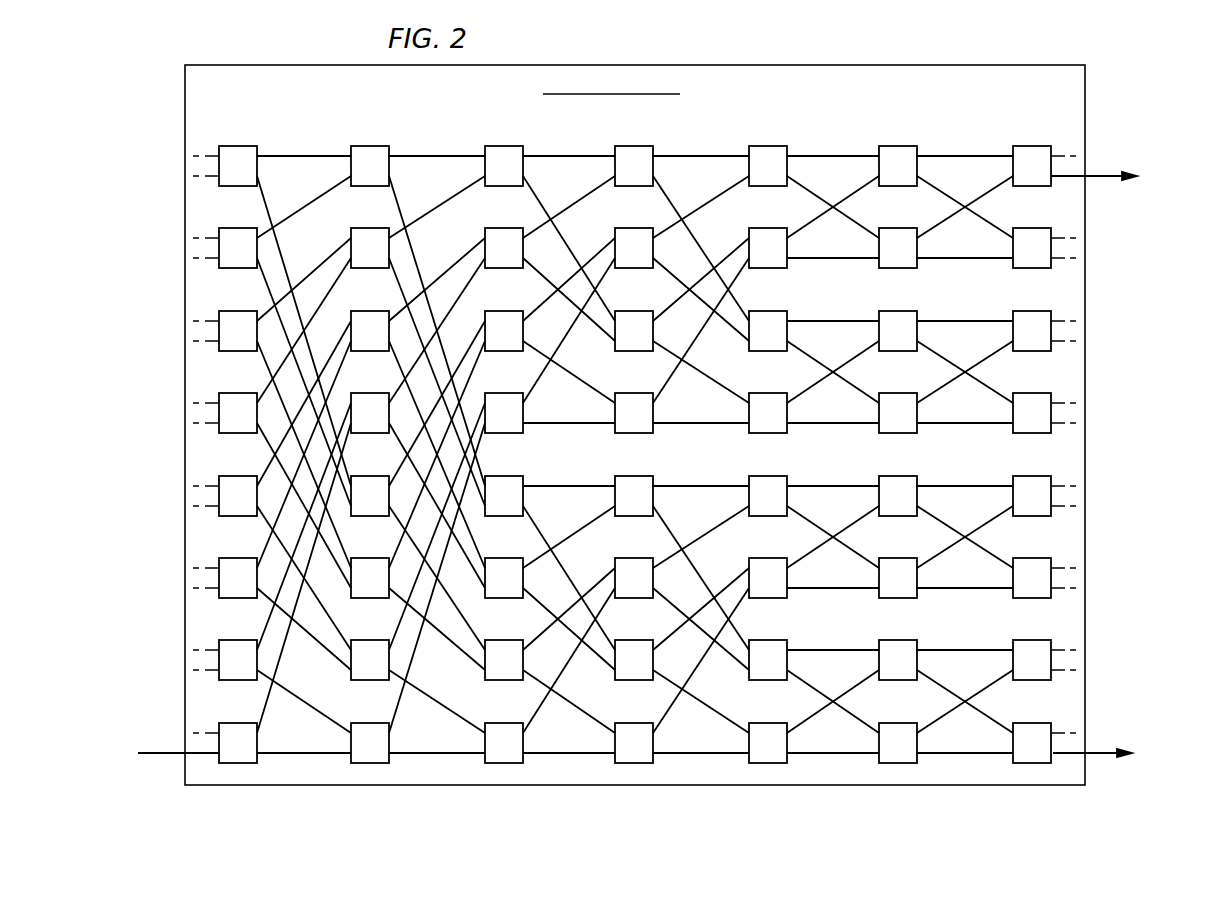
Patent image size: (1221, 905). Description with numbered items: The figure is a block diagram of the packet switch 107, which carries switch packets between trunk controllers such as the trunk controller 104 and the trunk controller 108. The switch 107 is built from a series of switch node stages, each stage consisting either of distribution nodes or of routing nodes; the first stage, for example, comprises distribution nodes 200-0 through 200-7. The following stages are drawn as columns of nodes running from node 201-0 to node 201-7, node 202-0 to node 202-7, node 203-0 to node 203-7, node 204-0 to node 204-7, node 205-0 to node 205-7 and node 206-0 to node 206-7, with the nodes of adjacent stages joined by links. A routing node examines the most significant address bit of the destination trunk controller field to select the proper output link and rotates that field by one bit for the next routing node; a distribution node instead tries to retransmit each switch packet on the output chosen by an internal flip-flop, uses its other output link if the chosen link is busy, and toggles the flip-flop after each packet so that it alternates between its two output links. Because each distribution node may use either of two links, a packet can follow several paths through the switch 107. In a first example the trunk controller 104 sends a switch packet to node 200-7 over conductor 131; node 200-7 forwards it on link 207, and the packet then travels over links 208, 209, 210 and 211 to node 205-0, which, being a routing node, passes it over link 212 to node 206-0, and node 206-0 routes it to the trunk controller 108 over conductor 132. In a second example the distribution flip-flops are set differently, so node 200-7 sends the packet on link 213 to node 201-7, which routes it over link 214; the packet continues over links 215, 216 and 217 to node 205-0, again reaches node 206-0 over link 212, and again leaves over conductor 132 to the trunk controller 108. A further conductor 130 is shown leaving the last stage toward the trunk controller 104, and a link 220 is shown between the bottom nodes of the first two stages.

The packet switch 107 is at (713, 65).
The trunk controller 104 is at (635, 739).
The trunk controller 108 is at (1169, 179).
The output link to trunk controller 104 130 is at (1105, 752).
The conductor 131 is at (160, 753).
The conductor 132 is at (1089, 176).
The distribution node 200-0 is at (229, 116).
The distribution node 200-7 is at (243, 756).
The routing node 201-0 is at (361, 116).
The routing node 201-7 is at (375, 756).
The distribution node 202-0 is at (495, 116).
The distribution node 202-7 is at (509, 756).
The routing node 203-0 is at (625, 116).
The routing node 203-7 is at (639, 756).
The distribution node 204-0 is at (759, 116).
The distribution node 204-7 is at (773, 756).
The routing node 205-0 is at (889, 116).
The routing node 205-7 is at (903, 756).
The routing node 206-0 is at (1023, 116).
The routing node 206-7 is at (1037, 756).
The link 207 is at (281, 655).
The link 208 is at (468, 283).
The link 209 is at (576, 202).
The link 210 is at (668, 156).
The link 211 is at (808, 156).
The link 212 is at (940, 156).
The link 213 is at (279, 753).
The link 214 is at (412, 660).
The link 215 is at (537, 423).
The link 216 is at (697, 337).
The link 217 is at (799, 230).
The link 220 is at (412, 753).